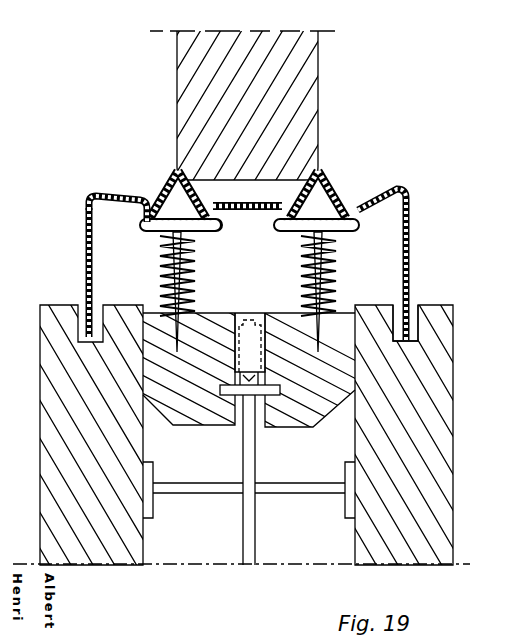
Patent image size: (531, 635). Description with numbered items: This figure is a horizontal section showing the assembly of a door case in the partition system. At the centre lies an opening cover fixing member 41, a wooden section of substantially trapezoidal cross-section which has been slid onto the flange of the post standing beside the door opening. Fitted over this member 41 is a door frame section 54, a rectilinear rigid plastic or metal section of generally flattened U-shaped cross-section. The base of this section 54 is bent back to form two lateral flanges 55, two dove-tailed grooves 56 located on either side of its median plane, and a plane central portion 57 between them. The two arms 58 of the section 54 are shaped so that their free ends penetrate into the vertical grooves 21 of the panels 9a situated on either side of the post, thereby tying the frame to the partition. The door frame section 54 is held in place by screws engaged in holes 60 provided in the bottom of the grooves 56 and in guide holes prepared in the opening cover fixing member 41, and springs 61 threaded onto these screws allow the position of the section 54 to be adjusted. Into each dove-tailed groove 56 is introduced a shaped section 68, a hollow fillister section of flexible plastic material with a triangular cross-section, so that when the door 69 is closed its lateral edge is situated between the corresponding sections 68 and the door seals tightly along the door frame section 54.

The door 69 is at (182, 108).
The door frame section 54 is at (262, 193).
The plane central portion 57 is at (222, 190).
The shaped section 68 is at (332, 192).
The dove-tailed groove 56 is at (147, 232).
The lateral flange 55 is at (100, 192).
The arm 58 is at (85, 286).
The hole 60 is at (323, 262).
The spring 61 is at (320, 282).
The panel 9a is at (70, 447).
The groove 21 is at (418, 339).
The opening cover fixing member 41 is at (347, 378).